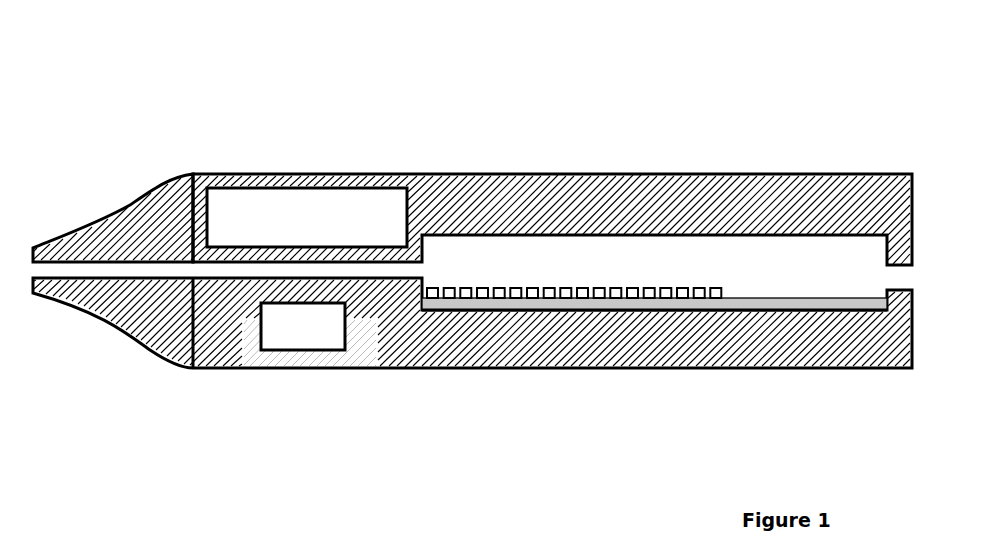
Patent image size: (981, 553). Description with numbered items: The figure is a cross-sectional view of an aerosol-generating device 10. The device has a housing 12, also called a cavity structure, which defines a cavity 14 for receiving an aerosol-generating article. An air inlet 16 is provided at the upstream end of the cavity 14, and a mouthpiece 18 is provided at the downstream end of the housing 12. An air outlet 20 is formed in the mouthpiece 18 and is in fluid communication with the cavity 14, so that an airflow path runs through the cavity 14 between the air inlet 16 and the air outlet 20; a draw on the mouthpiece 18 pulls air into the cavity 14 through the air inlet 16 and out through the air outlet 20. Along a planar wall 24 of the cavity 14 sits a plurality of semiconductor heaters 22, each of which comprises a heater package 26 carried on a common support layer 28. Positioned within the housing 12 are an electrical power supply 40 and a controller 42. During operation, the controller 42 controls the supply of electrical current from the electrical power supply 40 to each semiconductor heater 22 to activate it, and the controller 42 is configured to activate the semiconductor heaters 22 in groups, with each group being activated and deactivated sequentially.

The aerosol-generating device 10 is at (474, 276).
The housing 12 is at (217, 358).
The cavity 14 is at (477, 250).
The air inlet 16 is at (902, 275).
The mouthpiece 18 is at (143, 218).
The air outlet 20 is at (44, 269).
The semiconductor heaters 22 is at (566, 297).
The planar wall 24 is at (608, 310).
The heater package 26 is at (500, 298).
The common support layer 28 is at (747, 305).
The electrical power supply 40 is at (307, 217).
The controller 42 is at (303, 326).